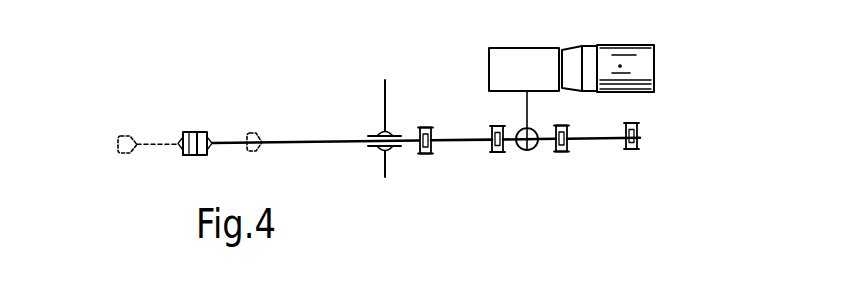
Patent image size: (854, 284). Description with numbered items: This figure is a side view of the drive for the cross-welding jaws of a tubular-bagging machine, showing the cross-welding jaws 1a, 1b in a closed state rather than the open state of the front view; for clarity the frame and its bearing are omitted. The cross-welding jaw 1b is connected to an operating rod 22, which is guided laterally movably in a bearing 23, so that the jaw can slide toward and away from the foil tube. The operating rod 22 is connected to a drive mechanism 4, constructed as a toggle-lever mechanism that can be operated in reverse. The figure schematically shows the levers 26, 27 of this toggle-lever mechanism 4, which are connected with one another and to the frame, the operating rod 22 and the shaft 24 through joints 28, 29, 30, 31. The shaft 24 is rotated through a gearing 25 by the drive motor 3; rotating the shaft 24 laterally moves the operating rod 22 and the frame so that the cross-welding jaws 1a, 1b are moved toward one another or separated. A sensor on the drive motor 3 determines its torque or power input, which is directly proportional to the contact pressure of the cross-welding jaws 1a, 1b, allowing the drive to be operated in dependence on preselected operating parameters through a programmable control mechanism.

The cross-welding jaw 1a is at (188, 158).
The cross-welding jaw 1b is at (200, 158).
The drive motor 3 is at (625, 46).
The drive mechanism 4 is at (522, 164).
The operating rod 22 is at (315, 139).
The bearing 23 is at (390, 128).
The shaft 24 is at (531, 151).
The gearing 25 is at (529, 50).
The lever 26 is at (450, 145).
The lever 27 is at (606, 141).
The joint 28 is at (426, 156).
The joint 29 is at (496, 153).
The joint 30 is at (561, 154).
The joint 31 is at (638, 152).